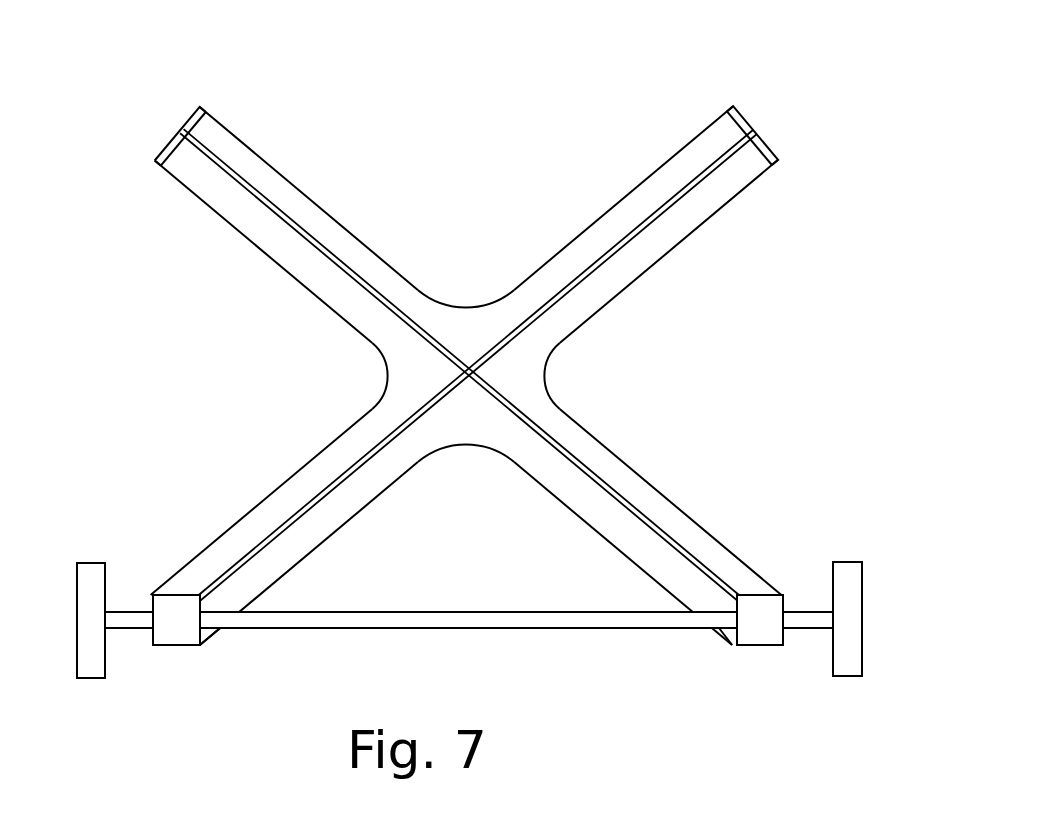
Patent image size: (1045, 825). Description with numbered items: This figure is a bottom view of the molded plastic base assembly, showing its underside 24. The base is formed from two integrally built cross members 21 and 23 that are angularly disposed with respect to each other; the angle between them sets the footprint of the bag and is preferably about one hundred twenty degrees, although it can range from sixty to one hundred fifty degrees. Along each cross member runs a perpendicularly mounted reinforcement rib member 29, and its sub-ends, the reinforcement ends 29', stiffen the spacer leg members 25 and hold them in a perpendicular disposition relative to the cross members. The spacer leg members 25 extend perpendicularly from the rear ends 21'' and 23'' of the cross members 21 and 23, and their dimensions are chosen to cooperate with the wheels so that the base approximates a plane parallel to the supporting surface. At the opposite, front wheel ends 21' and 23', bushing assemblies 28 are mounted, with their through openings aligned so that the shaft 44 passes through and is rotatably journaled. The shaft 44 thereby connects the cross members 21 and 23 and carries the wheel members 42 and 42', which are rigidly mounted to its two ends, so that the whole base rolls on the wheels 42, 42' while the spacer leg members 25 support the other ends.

The cross member 21 is at (468, 376).
The front wheel end 21' is at (689, 666).
The end of member 21 21'' is at (236, 118).
The cross member 23 is at (465, 375).
The front wheel end 23' is at (248, 665).
The end of member 23 23'' is at (710, 103).
The underside 24 is at (522, 389).
The spacer leg member 25 is at (155, 158).
The bushing assembly 28 is at (172, 637).
The reinforcement rib member 29 is at (464, 368).
The reinforcement end 29' is at (509, 369).
The wheel member 42 is at (114, 575).
The wheel member 42' is at (822, 575).
The shaft 44 is at (570, 628).